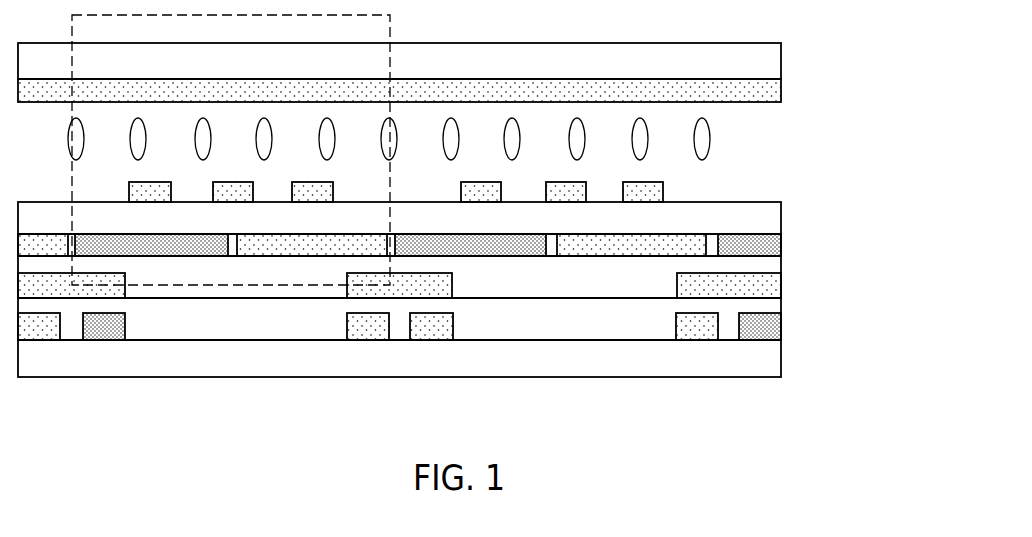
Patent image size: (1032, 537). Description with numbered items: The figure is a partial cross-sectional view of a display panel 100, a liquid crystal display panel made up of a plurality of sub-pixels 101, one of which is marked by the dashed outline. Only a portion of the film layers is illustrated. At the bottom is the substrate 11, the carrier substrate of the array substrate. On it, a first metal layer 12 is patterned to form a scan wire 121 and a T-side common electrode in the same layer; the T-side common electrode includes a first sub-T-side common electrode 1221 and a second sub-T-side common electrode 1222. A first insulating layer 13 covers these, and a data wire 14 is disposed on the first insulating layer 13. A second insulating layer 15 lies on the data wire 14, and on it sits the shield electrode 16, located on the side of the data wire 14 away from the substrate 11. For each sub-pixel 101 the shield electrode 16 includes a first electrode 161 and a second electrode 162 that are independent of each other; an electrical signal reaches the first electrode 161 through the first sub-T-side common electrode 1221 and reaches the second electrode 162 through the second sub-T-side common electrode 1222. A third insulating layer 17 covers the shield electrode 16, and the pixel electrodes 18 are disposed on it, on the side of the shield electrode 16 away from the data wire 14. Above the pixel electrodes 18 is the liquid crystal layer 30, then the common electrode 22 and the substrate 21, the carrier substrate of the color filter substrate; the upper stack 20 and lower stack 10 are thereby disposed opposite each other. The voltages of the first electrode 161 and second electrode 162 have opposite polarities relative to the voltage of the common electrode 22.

The display panel 100 is at (792, 21).
The sub-pixel 101 is at (390, 15).
The display panel 10 is at (476, 310).
The substrate 11 is at (436, 358).
The first metal layer 12 is at (436, 380).
The scan wire 121 is at (370, 328).
The first sub-T-side common electrode 1221 is at (100, 328).
The second sub-T-side common electrode 1222 is at (440, 328).
The first insulating layer 13 is at (765, 303).
The data wire 14 is at (765, 283).
The second insulating layer 15 is at (765, 262).
The shield electrode 16 is at (436, 324).
The first electrode 161 is at (165, 256).
The second electrode 162 is at (265, 256).
The third insulating layer 17 is at (765, 212).
The pixel electrode 18 is at (663, 190).
The cover plate 20 is at (470, 74).
The substrate 21 is at (765, 55).
The common electrode 22 is at (765, 89).
The liquid crystal layer 30 is at (702, 134).